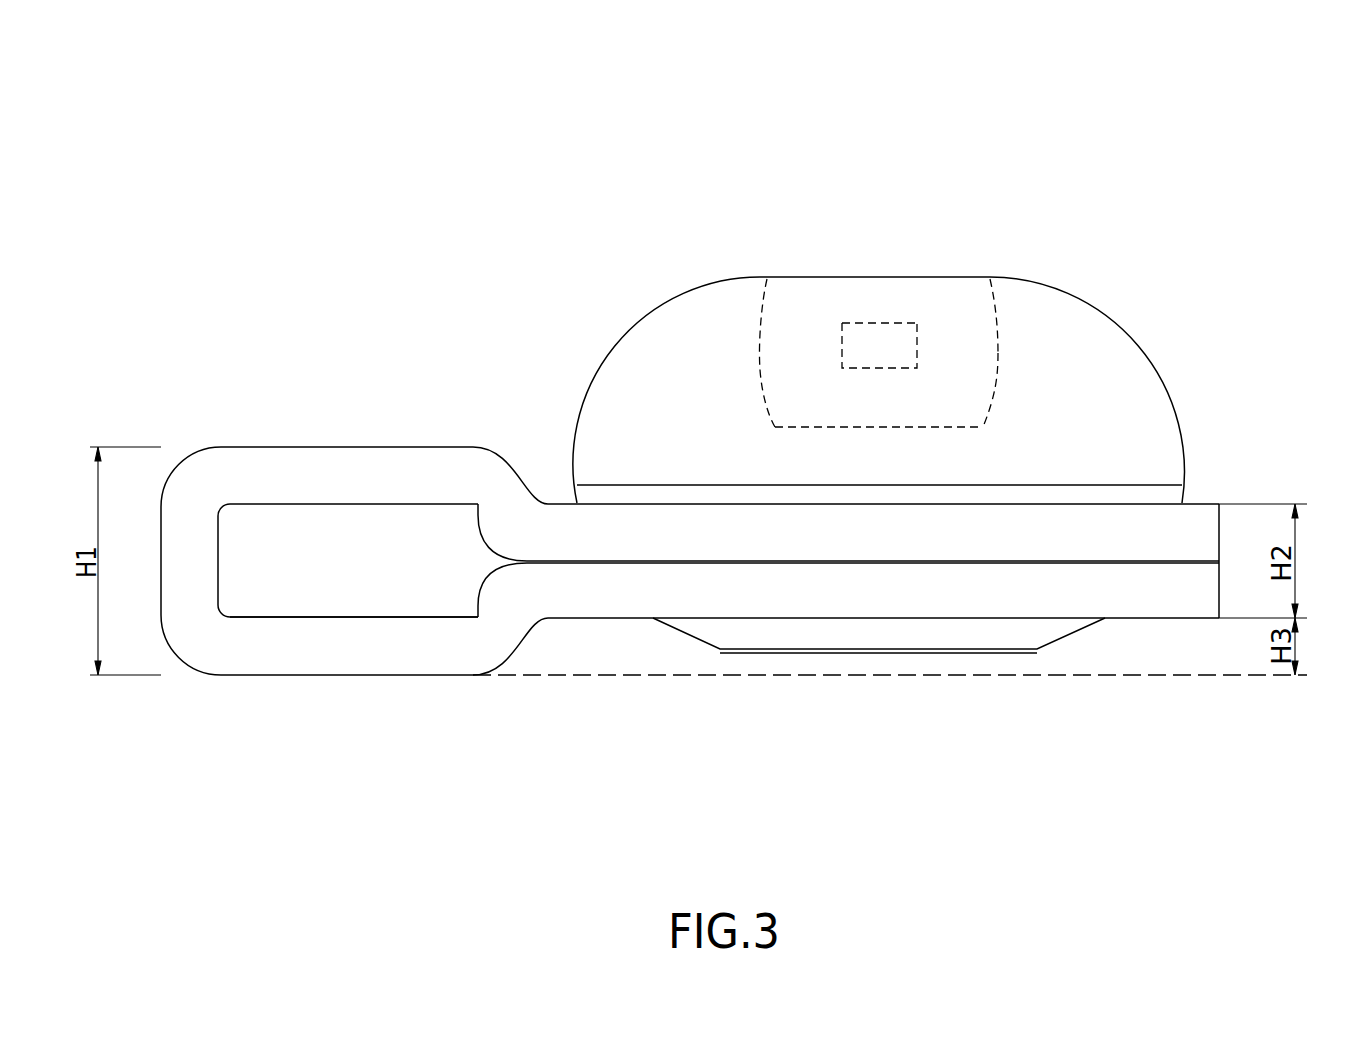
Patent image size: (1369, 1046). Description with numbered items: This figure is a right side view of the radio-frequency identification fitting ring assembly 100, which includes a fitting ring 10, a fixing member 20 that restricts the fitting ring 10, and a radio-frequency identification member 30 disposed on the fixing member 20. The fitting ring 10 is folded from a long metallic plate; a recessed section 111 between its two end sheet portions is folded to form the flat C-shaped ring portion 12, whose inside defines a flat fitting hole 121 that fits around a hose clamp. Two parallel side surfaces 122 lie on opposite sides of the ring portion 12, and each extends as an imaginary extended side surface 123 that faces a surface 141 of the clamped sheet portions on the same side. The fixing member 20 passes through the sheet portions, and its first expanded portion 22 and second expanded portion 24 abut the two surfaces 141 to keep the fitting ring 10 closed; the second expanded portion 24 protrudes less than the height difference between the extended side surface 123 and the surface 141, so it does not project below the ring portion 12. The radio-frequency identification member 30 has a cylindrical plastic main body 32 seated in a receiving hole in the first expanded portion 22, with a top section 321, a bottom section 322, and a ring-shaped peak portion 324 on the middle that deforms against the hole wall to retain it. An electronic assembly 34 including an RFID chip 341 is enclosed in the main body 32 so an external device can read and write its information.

The radio-frequency identification fitting ring assembly 100 is at (352, 150).
The fitting ring 10 is at (360, 323).
The ring portion 12 is at (161, 528).
The recessed section 111 is at (270, 617).
The fitting hole 121 is at (373, 600).
The side surface 122 is at (253, 675).
The extended side surface 123 is at (725, 677).
The fixing member 20 is at (978, 720).
The first expanded portion 22 is at (603, 460).
The second expanded portion 24 is at (852, 640).
The surface 141 is at (1193, 503).
The radio-frequency identification member 30 is at (868, 193).
The main body 32 is at (762, 367).
The top section 321 is at (762, 307).
The bottom section 322 is at (993, 398).
The peak portion 324 is at (998, 353).
The electronic assembly 34 is at (855, 323).
The RFID chip 341 is at (880, 323).